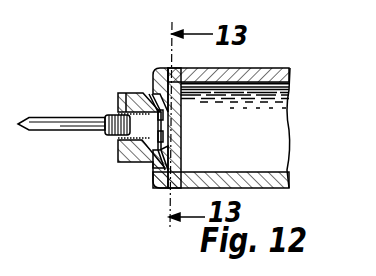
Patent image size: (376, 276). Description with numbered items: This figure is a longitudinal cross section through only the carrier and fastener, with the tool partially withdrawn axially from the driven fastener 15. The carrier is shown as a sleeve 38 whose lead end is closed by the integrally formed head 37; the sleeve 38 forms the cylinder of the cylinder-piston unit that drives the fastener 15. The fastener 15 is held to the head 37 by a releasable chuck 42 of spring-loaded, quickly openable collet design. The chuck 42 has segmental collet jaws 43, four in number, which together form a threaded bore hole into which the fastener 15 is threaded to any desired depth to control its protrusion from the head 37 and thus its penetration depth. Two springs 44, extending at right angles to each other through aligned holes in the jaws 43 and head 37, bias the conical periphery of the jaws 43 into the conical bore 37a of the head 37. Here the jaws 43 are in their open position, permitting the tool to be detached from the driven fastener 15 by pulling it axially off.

The fastener 15 is at (79, 131).
The head 37 is at (183, 105).
The conical bore 37a is at (140, 162).
The sleeve 38 is at (263, 68).
The releasable chuck 42 is at (126, 92).
The collet jaws 43 is at (118, 96).
The springs 44 is at (158, 157).